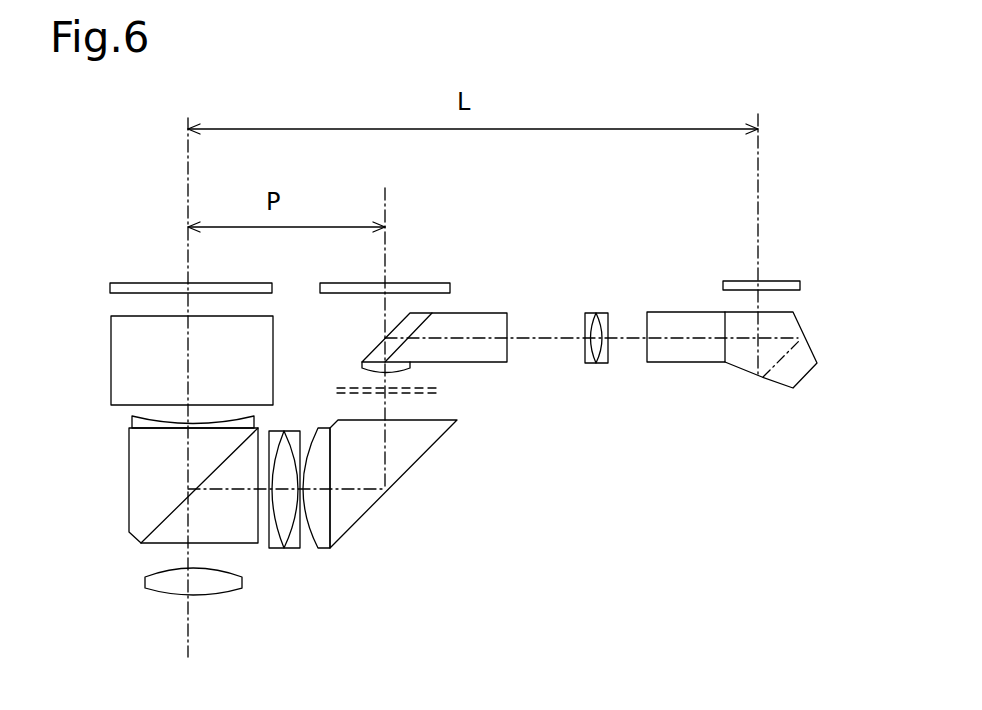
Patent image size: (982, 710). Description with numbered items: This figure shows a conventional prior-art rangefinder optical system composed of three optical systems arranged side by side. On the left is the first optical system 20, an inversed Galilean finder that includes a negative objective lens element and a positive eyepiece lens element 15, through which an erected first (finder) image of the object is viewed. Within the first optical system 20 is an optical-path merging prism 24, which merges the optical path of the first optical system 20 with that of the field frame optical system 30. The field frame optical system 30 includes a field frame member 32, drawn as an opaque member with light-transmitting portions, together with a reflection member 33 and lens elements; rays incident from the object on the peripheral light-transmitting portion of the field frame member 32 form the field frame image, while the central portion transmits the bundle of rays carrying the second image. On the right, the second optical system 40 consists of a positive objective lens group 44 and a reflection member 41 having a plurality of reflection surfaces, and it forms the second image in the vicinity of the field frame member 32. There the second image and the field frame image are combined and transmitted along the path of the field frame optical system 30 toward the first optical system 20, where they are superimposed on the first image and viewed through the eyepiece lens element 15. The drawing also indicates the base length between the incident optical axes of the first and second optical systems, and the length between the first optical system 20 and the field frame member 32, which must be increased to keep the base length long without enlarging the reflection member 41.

The positive eyepiece lens element 15 is at (163, 585).
The first optical system 20 is at (68, 268).
The optical-path merging prism 24 is at (138, 482).
The field frame optical system 30 is at (497, 268).
The field frame member 32 is at (448, 390).
The reflection member 33 is at (352, 515).
The second optical system 40 is at (781, 497).
The reflection member 41 is at (785, 325).
The positive objective lens group 44 is at (603, 299).